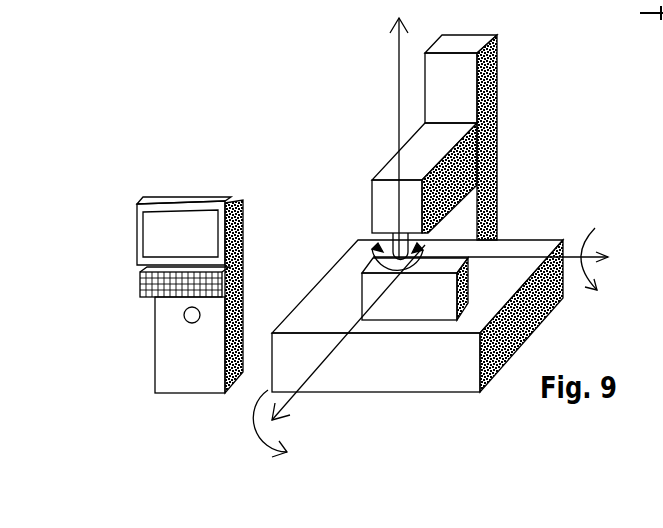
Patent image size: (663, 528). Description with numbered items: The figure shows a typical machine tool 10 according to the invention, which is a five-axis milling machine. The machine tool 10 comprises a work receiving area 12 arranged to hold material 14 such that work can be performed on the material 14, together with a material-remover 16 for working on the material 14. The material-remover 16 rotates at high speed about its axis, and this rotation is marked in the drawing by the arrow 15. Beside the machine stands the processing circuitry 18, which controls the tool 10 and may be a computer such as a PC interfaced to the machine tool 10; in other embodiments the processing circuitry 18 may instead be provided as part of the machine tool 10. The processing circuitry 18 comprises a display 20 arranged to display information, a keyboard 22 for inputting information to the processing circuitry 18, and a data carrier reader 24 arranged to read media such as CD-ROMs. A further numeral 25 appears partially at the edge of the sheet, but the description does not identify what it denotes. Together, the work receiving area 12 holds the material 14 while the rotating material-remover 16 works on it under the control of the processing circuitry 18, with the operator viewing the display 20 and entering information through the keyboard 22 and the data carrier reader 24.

The machine tool 10 is at (442, 256).
The work receiving area 12 is at (387, 373).
The material 14 is at (441, 305).
The arrow 15 is at (407, 263).
The material-remover 16 is at (394, 256).
The processing circuitry 18 is at (136, 247).
The display 20 is at (163, 230).
The keyboard 22 is at (138, 280).
The data carrier reader 24 is at (170, 314).
The reference numeral (partially shown) 25 is at (107, 6).